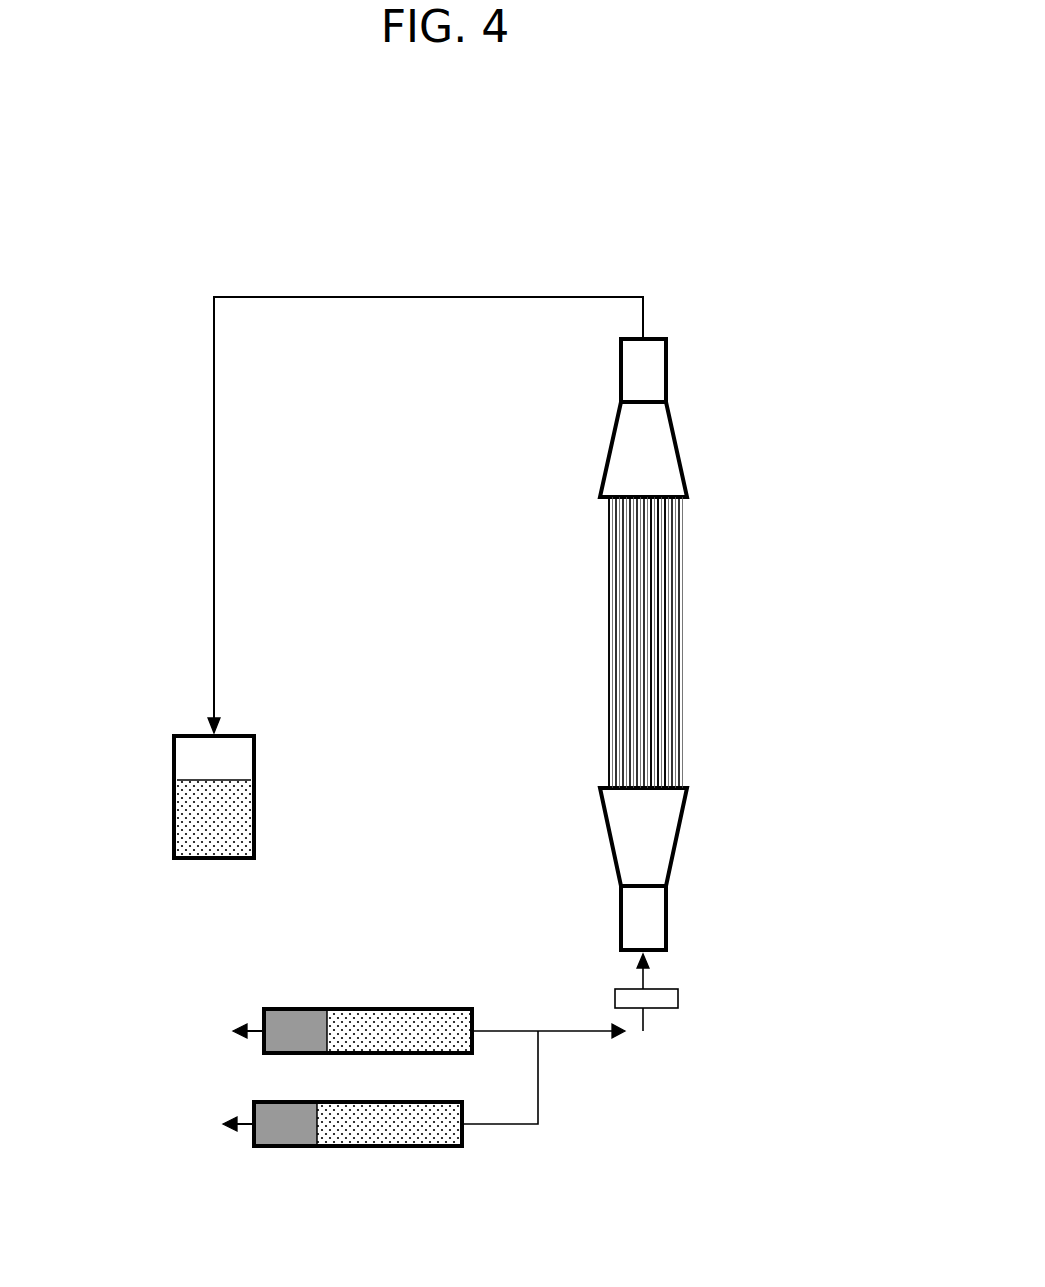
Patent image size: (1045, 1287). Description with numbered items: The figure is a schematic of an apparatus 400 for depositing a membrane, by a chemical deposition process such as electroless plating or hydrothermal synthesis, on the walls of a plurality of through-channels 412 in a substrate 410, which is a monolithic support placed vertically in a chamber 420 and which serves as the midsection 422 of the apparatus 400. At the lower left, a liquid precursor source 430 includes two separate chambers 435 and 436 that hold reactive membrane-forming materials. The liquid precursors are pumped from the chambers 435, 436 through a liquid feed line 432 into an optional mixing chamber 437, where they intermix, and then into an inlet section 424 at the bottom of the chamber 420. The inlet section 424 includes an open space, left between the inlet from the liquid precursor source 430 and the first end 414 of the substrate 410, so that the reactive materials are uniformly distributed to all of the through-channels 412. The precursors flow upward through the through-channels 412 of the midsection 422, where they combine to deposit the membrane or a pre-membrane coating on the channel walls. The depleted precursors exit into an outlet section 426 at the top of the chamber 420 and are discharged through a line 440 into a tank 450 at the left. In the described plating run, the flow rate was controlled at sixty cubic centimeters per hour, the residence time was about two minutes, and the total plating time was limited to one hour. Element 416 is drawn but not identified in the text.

The apparatus 400 is at (472, 161).
The substrate 410 is at (657, 596).
The through-channels 412 is at (660, 640).
The first end 414 is at (657, 742).
The hollow fiber membrane 416 is at (657, 540).
The chamber 420 is at (447, 337).
The midsection 422 is at (607, 685).
The inlet section 424 is at (636, 876).
The outlet section 426 is at (580, 418).
The liquid precursor source 430 is at (188, 985).
The liquid feed line 432 is at (560, 1050).
The chamber 435 is at (390, 1130).
The chamber 436 is at (375, 1030).
The mixing chamber 437 is at (685, 998).
The line 440 is at (425, 475).
The tank 450 is at (172, 770).